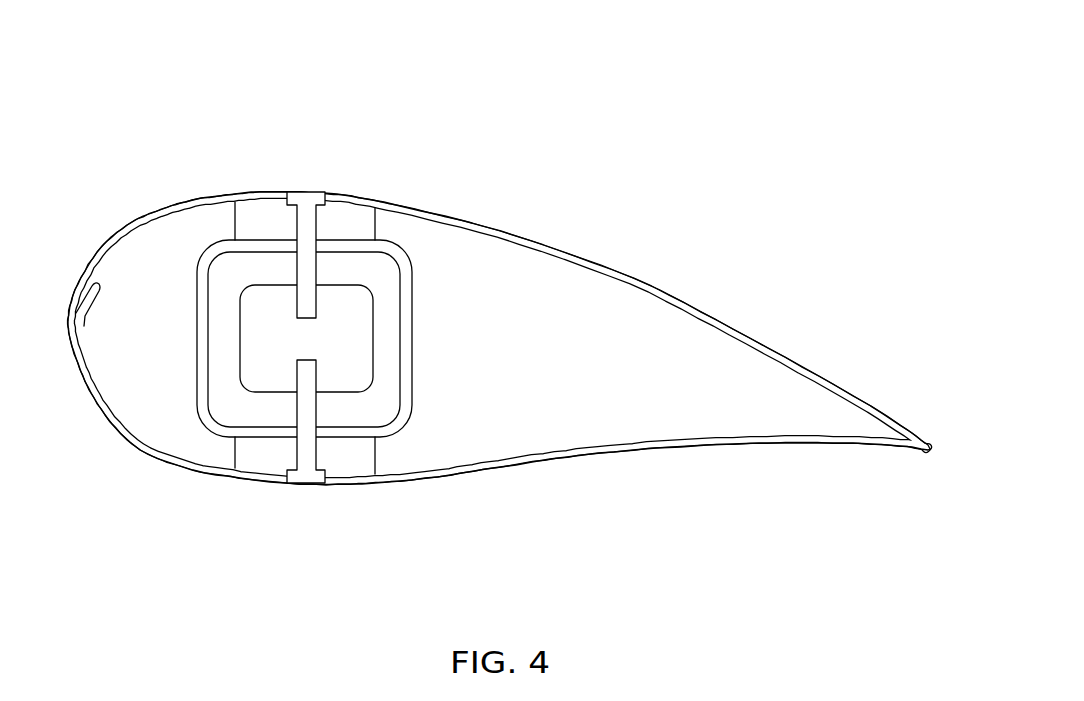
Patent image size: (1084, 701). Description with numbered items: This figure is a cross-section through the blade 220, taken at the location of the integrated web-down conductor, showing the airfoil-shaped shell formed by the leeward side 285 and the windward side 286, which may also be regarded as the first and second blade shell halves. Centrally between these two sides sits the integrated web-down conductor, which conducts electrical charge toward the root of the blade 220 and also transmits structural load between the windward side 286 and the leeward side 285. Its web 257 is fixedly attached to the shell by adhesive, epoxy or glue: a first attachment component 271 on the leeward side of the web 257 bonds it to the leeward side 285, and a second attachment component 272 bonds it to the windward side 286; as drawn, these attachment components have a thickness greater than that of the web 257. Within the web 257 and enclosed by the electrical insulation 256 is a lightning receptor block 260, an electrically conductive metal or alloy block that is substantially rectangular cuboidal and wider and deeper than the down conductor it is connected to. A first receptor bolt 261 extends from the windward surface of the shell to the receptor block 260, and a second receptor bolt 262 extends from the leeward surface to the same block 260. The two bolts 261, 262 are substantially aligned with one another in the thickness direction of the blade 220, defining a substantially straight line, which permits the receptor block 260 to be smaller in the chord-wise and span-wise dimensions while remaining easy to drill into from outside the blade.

The blade 220 is at (336, 124).
The leeward side 285 is at (620, 275).
The windward side 286 is at (568, 468).
The electrical insulation 256 is at (360, 267).
The lightning receptor block 260 is at (357, 320).
The first attachment component 271 is at (344, 222).
The second attachment component 272 is at (247, 455).
The web 257 is at (352, 442).
The second receptor bolt 262 is at (297, 192).
The first receptor bolt 261 is at (300, 487).